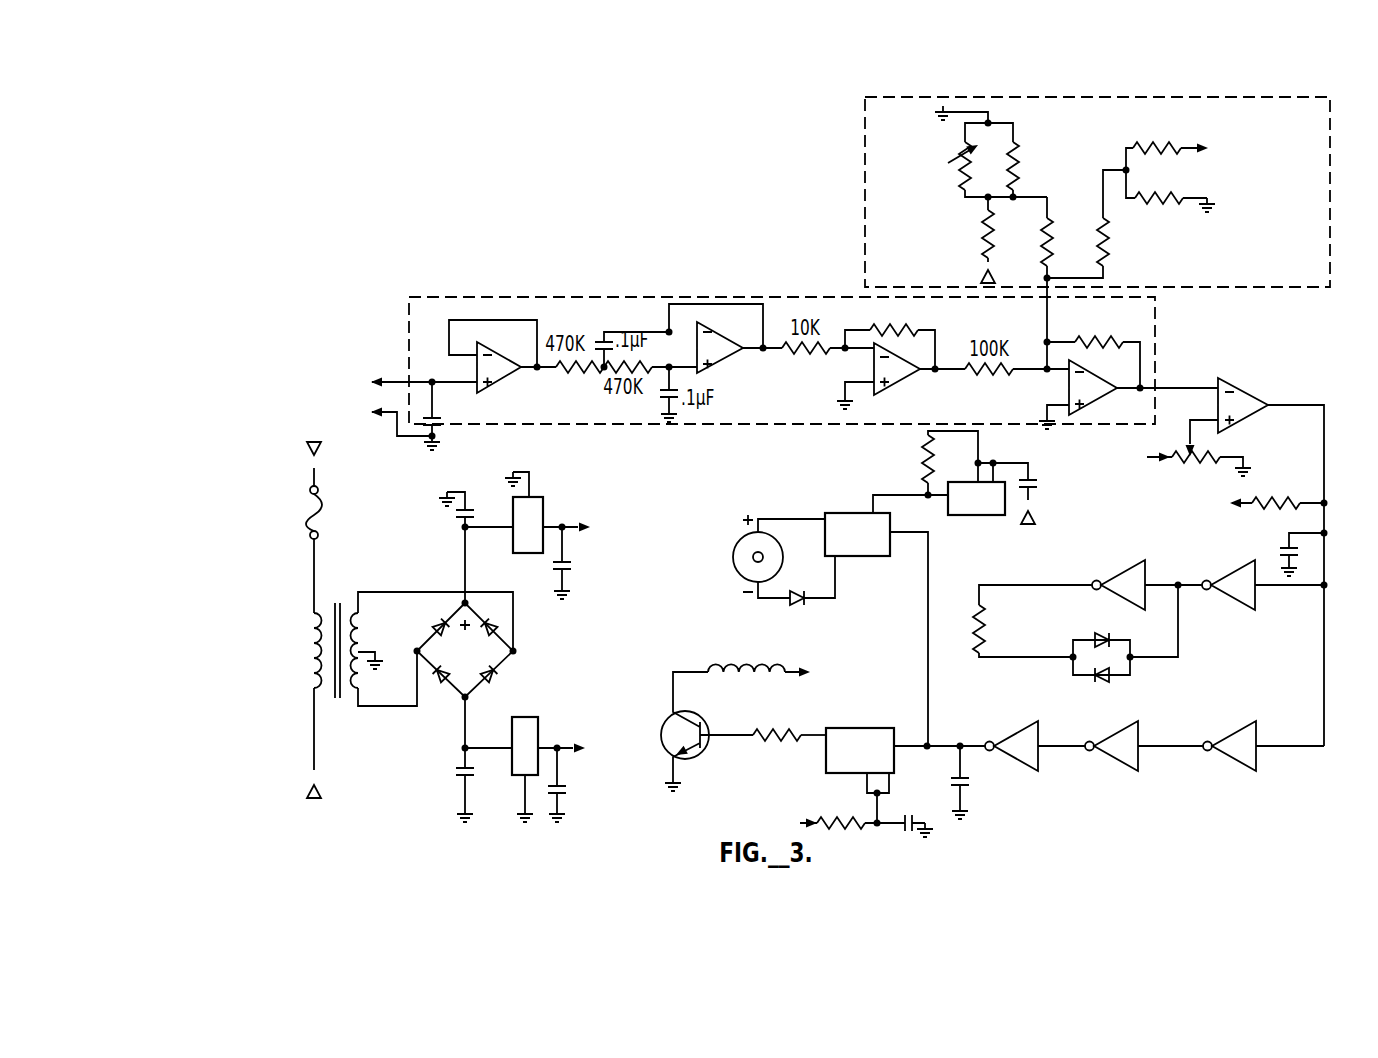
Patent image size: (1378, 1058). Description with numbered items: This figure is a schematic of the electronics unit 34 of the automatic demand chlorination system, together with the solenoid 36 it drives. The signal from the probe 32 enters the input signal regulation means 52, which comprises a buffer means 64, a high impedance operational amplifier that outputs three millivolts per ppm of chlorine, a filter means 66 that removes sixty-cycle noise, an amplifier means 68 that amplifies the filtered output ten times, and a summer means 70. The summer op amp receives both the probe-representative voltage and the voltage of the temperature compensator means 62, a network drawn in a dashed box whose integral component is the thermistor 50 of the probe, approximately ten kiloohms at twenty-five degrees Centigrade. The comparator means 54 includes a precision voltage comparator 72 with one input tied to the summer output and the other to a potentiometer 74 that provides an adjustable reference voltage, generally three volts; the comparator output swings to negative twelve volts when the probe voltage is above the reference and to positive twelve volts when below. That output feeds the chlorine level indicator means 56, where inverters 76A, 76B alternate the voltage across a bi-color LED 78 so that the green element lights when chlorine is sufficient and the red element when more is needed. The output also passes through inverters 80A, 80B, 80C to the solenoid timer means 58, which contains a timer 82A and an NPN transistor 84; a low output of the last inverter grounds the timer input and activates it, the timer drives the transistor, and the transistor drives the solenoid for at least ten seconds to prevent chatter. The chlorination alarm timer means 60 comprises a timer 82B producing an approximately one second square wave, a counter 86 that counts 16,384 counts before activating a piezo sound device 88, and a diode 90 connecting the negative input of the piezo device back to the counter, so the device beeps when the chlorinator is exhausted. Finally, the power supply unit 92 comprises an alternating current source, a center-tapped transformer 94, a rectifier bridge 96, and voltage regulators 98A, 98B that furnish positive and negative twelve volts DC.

The probe 32 is at (346, 402).
The electronics unit 34 is at (478, 140).
The solenoid 36 is at (756, 673).
The thermistor 50 is at (951, 165).
The input signal regulation means 52 is at (603, 297).
The comparator means 54 is at (1216, 554).
The chlorine level indicator means 56 is at (1113, 552).
The solenoid timer means 58 is at (858, 704).
The chlorination alarm timer means 60 is at (857, 484).
The temperature compensator means 62 is at (863, 118).
The buffer means 64 is at (512, 373).
The filter means 66 is at (735, 360).
The amplifier means 68 is at (912, 380).
The summer means 70 is at (1112, 398).
The precision voltage comparator 72 is at (1250, 389).
The potentiometer 74 is at (1180, 455).
The inverter 76A is at (1252, 600).
The inverter 76B is at (1135, 574).
The bi-color light emitting diode 78 is at (1073, 666).
The inverter 80A is at (1236, 726).
The inverter 80B is at (1120, 732).
The inverter 80C is at (1016, 732).
The timer 82A is at (872, 728).
The timer 82B is at (972, 515).
The NPN transistor 84 is at (705, 752).
The counter 86 is at (872, 556).
The piezo sound device 88 is at (737, 553).
The diode 90 is at (797, 606).
The power supply unit 92 is at (268, 598).
The center-tapped transformer 94 is at (363, 628).
The rectifier bridge 96 is at (513, 652).
The voltage regulator 98A is at (515, 553).
The voltage regulator 98B is at (528, 717).